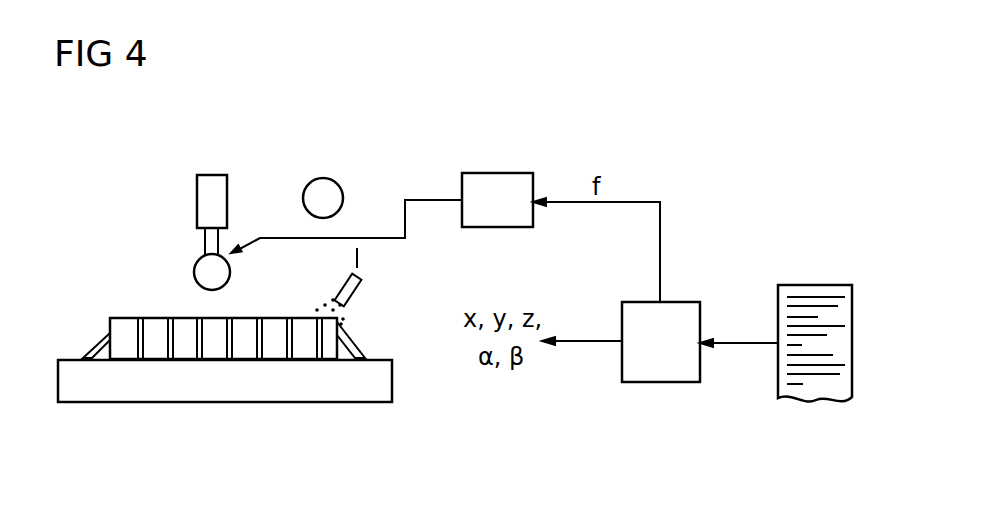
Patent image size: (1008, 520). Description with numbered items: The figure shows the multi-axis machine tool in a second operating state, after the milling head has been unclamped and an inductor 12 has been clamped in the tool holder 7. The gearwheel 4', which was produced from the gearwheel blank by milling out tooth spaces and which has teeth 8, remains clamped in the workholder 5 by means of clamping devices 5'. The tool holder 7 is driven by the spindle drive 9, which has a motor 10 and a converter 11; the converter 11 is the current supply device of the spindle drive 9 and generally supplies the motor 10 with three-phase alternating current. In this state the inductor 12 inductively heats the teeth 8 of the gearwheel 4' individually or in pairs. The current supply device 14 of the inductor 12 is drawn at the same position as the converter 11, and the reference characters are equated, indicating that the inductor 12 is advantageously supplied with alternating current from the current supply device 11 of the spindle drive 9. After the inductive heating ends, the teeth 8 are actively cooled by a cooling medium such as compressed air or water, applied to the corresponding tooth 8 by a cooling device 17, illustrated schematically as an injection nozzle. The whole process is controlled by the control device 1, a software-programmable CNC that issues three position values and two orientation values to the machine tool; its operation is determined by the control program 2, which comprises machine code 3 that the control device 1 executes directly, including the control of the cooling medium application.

The control device 1 is at (657, 383).
The control program 2 is at (815, 335).
The machine code 3 is at (822, 378).
The gearwheel 4' is at (222, 305).
The workholder 5 is at (222, 349).
The clamping devices 5' is at (237, 322).
The tool holder 7 is at (213, 175).
The teeth 8 is at (198, 318).
The spindle drive 9 is at (389, 155).
The motor 10 is at (322, 177).
The converter 11 is at (497, 173).
The inductor 12 is at (228, 270).
The current supply device 14 is at (490, 169).
The cooling device 17 is at (340, 283).